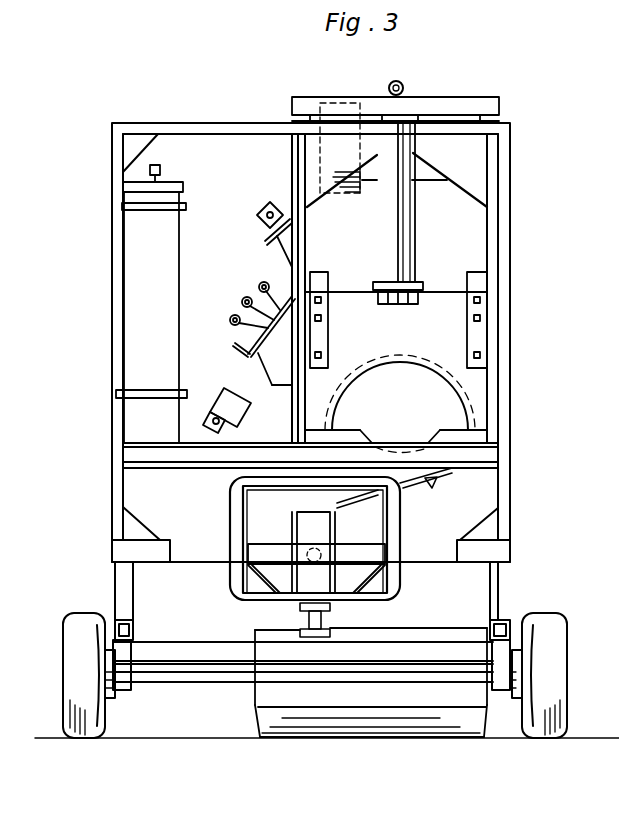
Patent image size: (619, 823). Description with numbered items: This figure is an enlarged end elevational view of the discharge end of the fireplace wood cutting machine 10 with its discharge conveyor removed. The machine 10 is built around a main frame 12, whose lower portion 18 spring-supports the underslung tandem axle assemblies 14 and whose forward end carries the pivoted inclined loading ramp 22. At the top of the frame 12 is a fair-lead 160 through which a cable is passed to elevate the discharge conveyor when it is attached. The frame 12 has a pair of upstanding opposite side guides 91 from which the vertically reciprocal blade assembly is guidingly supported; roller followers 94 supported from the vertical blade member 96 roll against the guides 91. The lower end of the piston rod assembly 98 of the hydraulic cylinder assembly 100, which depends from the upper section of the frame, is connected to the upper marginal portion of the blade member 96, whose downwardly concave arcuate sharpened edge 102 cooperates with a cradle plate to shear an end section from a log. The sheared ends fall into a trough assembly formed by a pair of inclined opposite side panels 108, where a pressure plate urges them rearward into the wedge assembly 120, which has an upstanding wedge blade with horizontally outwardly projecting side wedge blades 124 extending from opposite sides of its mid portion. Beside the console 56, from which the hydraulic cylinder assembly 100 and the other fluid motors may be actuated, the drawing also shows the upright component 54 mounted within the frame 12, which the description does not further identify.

The fireplace wood cutting machine 10 is at (110, 326).
The main frame 12 is at (517, 522).
The tandem axle assemblies 14 is at (187, 673).
The lower portion of frame 18 is at (518, 616).
The inclined loading ramp 22 is at (278, 706).
The tank 54 is at (160, 300).
The console 56 is at (257, 358).
The side guides 91 is at (292, 172).
The roller followers 94 is at (315, 338).
The vertical blade member 96 is at (462, 383).
The piston rod assembly 98 is at (400, 305).
The hydraulic cylinder assembly 100 is at (400, 240).
The arcuate sharpened edge 102 is at (353, 402).
The inclined side panels 108 is at (260, 592).
The wedge assembly 120 is at (343, 533).
The side wedge blades 124 is at (263, 553).
The fair-lead 160 is at (417, 62).